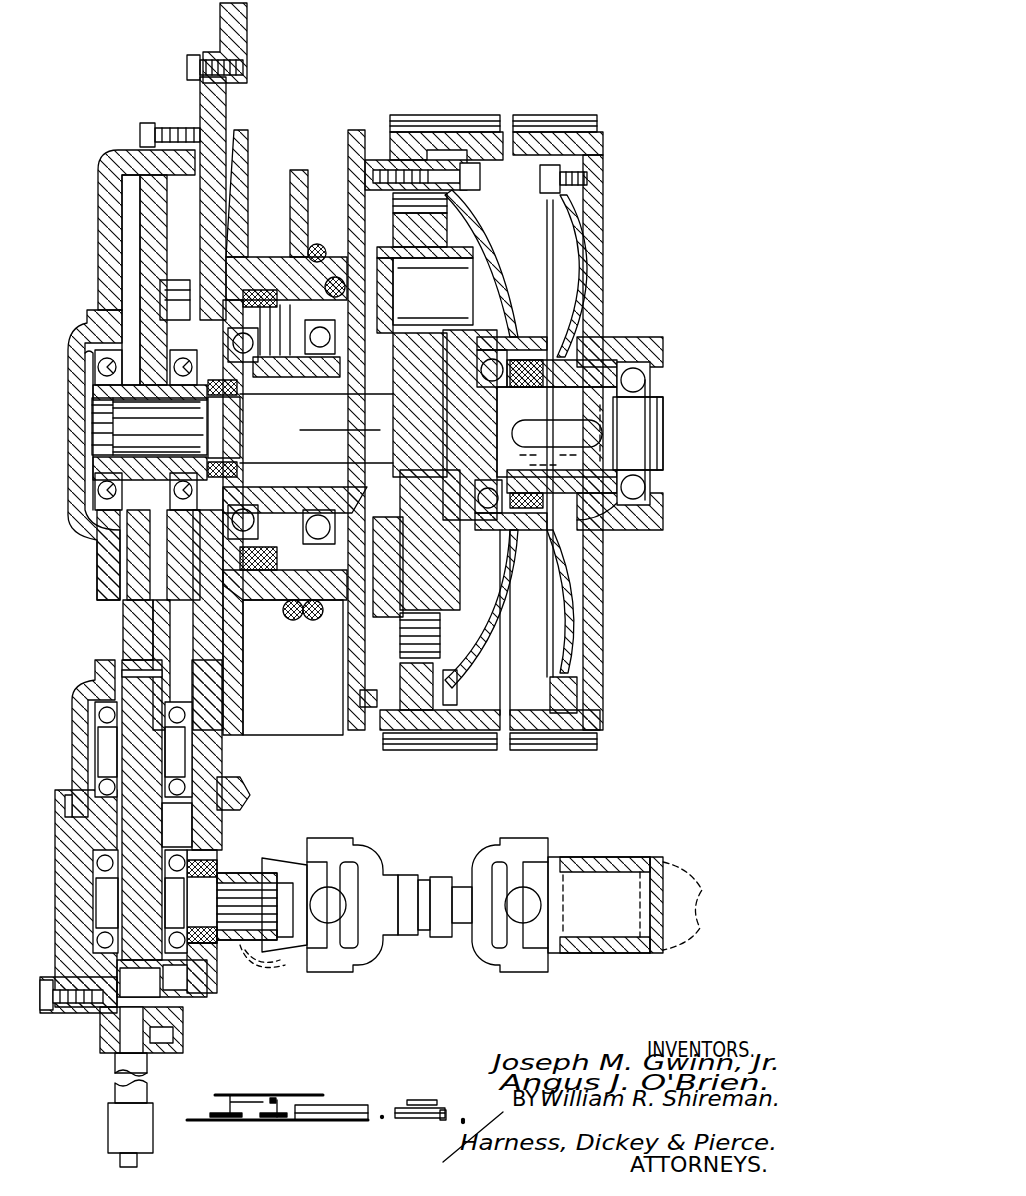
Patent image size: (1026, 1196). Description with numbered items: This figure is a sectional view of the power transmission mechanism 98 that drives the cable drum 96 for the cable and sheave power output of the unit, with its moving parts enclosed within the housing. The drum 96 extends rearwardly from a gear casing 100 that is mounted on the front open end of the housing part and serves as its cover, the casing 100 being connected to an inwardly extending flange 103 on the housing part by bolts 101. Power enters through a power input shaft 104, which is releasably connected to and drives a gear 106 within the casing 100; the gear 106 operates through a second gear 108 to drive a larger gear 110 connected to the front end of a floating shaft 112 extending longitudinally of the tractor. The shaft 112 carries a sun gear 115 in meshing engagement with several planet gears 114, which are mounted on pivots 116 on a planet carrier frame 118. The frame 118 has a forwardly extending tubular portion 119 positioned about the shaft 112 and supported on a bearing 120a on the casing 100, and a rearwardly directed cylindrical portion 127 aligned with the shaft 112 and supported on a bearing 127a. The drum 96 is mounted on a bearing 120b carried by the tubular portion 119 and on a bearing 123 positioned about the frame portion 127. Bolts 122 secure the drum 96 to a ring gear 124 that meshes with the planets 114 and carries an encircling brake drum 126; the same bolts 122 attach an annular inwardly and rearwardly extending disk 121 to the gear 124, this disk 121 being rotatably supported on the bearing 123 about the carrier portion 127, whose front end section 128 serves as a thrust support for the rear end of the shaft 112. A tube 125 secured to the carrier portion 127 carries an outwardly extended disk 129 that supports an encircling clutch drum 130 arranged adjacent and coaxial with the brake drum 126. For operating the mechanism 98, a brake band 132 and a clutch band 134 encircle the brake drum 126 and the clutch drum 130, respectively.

The drum 96 is at (256, 263).
The power transmission mechanism 98 is at (77, 589).
The gear casing 100 is at (88, 345).
The bolts 101 is at (187, 62).
The inwardly extending flange 103 is at (238, 33).
The power input shaft 104 is at (563, 867).
The gear 106 is at (152, 848).
The second gear 108 is at (142, 735).
The larger gear 110 is at (140, 507).
The floating shaft 112 is at (335, 442).
The planet gears 114 is at (402, 358).
The sun gear 115 is at (418, 477).
The pivots 116 is at (432, 303).
The planet carrier frame 118 is at (472, 233).
The forwardly extending tubular portion 119 is at (293, 497).
The bearing 120a is at (252, 365).
The bearing 120b is at (310, 368).
The annular disk 121 is at (497, 247).
The bolts 122 is at (478, 177).
The bearing 123 is at (507, 477).
The ring gear 124 is at (432, 185).
The tube 125 is at (617, 505).
The brake drum 126 is at (477, 135).
The rearwardly directed cylindrical portion 127 is at (600, 410).
The bearing 127a is at (640, 482).
The front end section 128 is at (462, 428).
The outwardly extended disk 129 is at (580, 617).
The clutch drum 130 is at (567, 140).
The brake band 132 is at (440, 745).
The clutch band 134 is at (553, 750).